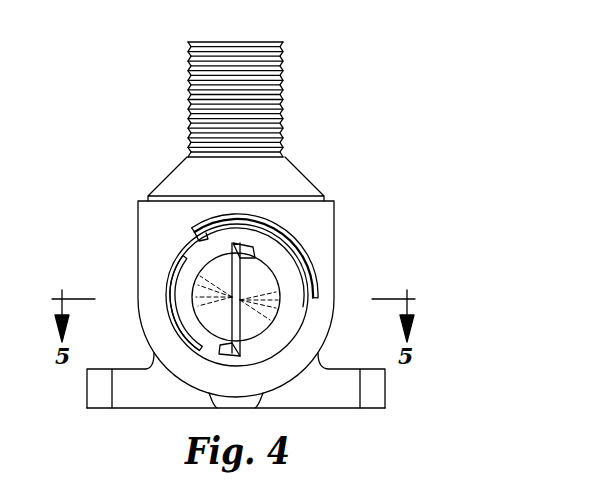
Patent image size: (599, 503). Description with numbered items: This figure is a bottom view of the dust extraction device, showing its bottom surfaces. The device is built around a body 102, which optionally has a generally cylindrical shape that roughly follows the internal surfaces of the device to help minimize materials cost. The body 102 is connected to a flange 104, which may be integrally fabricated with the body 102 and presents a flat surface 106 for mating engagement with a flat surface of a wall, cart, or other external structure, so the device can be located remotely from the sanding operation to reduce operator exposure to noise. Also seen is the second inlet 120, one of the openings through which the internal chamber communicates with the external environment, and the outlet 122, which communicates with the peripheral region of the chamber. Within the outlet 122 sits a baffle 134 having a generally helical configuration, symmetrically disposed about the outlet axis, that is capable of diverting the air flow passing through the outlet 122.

The body 102 is at (343, 228).
The flange 104 is at (393, 393).
The flat surface 106 is at (340, 408).
The second inlet 120 is at (266, 42).
The outlet 122 is at (203, 236).
The baffle 134 is at (215, 284).